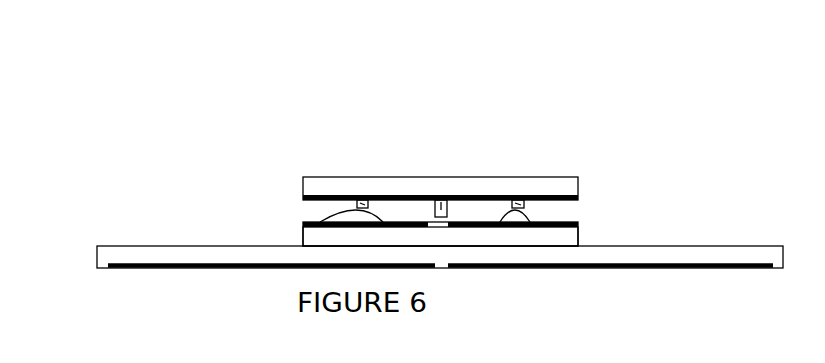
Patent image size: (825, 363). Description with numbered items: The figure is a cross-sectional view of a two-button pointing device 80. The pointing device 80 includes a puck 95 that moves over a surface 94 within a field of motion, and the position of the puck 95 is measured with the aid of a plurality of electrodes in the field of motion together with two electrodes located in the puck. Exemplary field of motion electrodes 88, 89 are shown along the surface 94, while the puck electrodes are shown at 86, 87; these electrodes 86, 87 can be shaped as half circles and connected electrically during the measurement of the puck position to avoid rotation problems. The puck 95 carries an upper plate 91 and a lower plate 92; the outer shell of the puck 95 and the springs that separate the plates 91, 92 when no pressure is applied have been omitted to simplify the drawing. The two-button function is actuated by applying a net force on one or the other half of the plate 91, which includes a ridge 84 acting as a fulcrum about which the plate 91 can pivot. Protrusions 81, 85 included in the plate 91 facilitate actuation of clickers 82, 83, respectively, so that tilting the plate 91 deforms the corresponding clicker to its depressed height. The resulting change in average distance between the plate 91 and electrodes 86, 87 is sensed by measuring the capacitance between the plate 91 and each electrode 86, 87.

The pointing device 80 is at (108, 121).
The protrusion 81 is at (378, 198).
The clicker 82 is at (348, 216).
The clicker 83 is at (503, 215).
The ridge 84 is at (442, 198).
The protrusion 85 is at (506, 198).
The puck electrode 86 is at (322, 222).
The puck electrode 87 is at (578, 222).
The field of motion electrode 88 is at (210, 268).
The field of motion electrode 89 is at (697, 270).
The plate 91 is at (558, 182).
The plate 92 is at (502, 237).
The surface 94 is at (762, 253).
The puck 95 is at (683, 170).